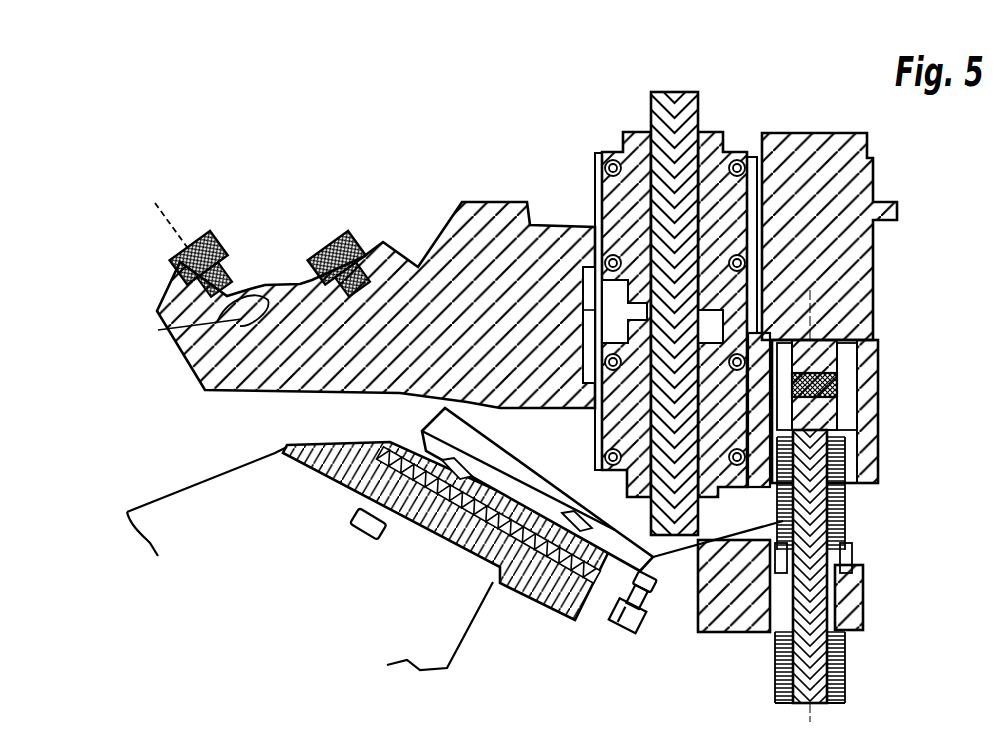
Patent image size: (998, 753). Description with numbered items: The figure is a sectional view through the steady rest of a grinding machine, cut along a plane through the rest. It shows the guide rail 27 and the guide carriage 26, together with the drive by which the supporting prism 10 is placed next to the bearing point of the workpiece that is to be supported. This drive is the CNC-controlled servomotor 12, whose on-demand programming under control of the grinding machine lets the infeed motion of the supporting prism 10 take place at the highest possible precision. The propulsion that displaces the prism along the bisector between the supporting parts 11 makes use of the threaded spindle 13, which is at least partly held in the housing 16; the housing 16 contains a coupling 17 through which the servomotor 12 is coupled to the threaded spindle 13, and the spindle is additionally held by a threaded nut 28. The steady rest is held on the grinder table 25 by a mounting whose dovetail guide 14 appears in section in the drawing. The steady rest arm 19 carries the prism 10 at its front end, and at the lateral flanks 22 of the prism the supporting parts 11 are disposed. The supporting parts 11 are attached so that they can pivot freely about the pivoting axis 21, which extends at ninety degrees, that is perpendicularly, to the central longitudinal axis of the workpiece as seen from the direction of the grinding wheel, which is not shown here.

The supporting prism 10 is at (170, 327).
The supporting parts 11 is at (236, 286).
The CNC-controlled servomotor 12 is at (855, 257).
The threaded spindle 13 is at (843, 651).
The dovetail guide 14 is at (529, 520).
The housing 16 is at (878, 426).
The coupling 17 is at (860, 381).
The steady rest arm 19 is at (258, 388).
The pivoting axis 21 is at (157, 215).
The lateral flanks 22 is at (308, 280).
The grinder table 25 is at (188, 515).
The guide carriage 26 is at (600, 195).
The guide rail 27 is at (680, 102).
The threaded nut 28 is at (838, 594).